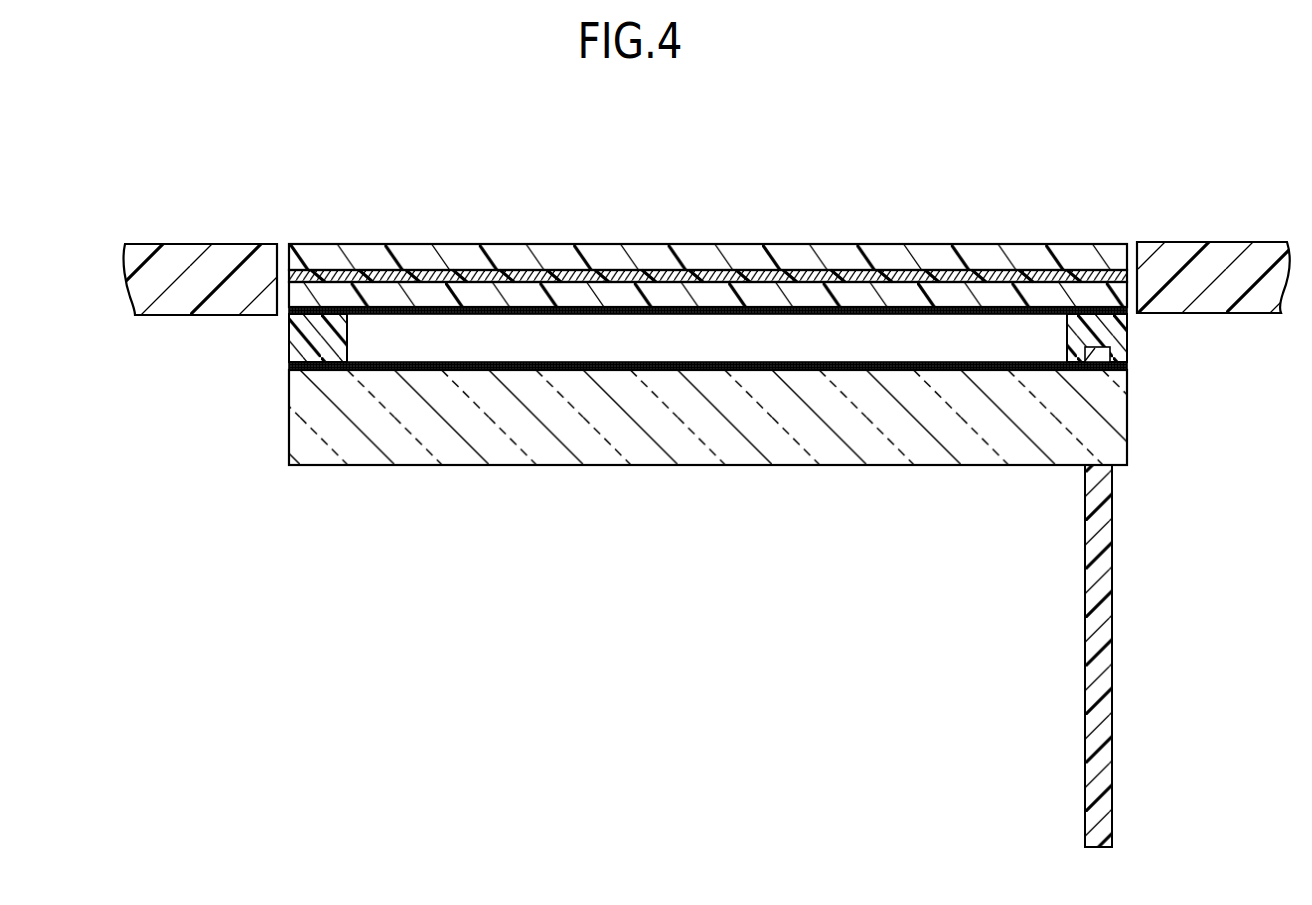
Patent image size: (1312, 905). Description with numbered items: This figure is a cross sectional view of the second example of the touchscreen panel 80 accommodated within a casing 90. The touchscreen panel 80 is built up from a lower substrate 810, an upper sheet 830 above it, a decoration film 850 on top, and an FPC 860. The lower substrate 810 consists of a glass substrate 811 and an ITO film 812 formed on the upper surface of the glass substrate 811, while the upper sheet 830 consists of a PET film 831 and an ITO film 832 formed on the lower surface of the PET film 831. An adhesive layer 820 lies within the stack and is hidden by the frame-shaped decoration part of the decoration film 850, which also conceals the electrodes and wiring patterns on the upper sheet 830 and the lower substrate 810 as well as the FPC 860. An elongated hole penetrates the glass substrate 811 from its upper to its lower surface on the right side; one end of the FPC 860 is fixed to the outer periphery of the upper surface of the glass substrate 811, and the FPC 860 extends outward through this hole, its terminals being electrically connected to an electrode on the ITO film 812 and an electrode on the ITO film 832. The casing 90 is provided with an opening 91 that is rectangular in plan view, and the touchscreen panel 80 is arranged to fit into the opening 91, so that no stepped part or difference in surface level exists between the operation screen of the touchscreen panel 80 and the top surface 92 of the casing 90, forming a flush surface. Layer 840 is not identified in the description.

The touchscreen panel 80 is at (663, 190).
The casing 90 is at (165, 254).
The opening 91 is at (283, 248).
The top surface 92 is at (1192, 243).
The decoration film 850 is at (473, 262).
The intermediate layer 840 is at (577, 272).
The upper sheet 830 is at (152, 330).
The PET film 831 is at (303, 293).
The ITO film 832 is at (290, 313).
The adhesive layer 820 is at (290, 366).
The lower substrate 810 is at (152, 432).
The glass substrate 811 is at (302, 430).
The ITO film 812 is at (307, 346).
The FPC 860 is at (1095, 742).